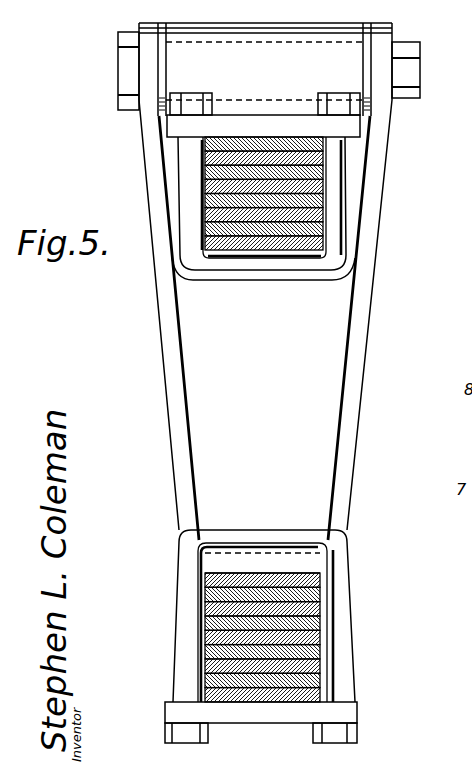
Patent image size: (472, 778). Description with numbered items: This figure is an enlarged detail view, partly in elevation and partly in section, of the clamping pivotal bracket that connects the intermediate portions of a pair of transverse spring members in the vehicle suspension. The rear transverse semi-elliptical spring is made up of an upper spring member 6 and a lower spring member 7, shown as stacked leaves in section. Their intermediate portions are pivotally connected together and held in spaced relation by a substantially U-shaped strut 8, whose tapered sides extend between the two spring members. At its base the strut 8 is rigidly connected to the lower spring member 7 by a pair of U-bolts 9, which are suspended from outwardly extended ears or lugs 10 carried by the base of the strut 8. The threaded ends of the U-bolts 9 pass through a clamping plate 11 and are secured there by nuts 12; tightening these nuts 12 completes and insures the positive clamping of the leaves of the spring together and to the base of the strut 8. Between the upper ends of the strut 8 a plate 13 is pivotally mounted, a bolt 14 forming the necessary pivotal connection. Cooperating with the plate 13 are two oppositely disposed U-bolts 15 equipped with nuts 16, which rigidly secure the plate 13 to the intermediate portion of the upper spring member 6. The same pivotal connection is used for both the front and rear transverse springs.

The upper spring member 6 is at (313, 200).
The lower spring member 7 is at (292, 608).
The U-shaped strut 8 is at (215, 397).
The U-bolts 9 is at (332, 653).
The ears or lugs 10 is at (212, 562).
The clamping plate 11 is at (337, 713).
The nuts 12 is at (338, 735).
The plate 13 is at (265, 69).
The bolt 14 is at (397, 70).
The U-bolts 15 is at (338, 158).
The nuts 16 is at (167, 100).